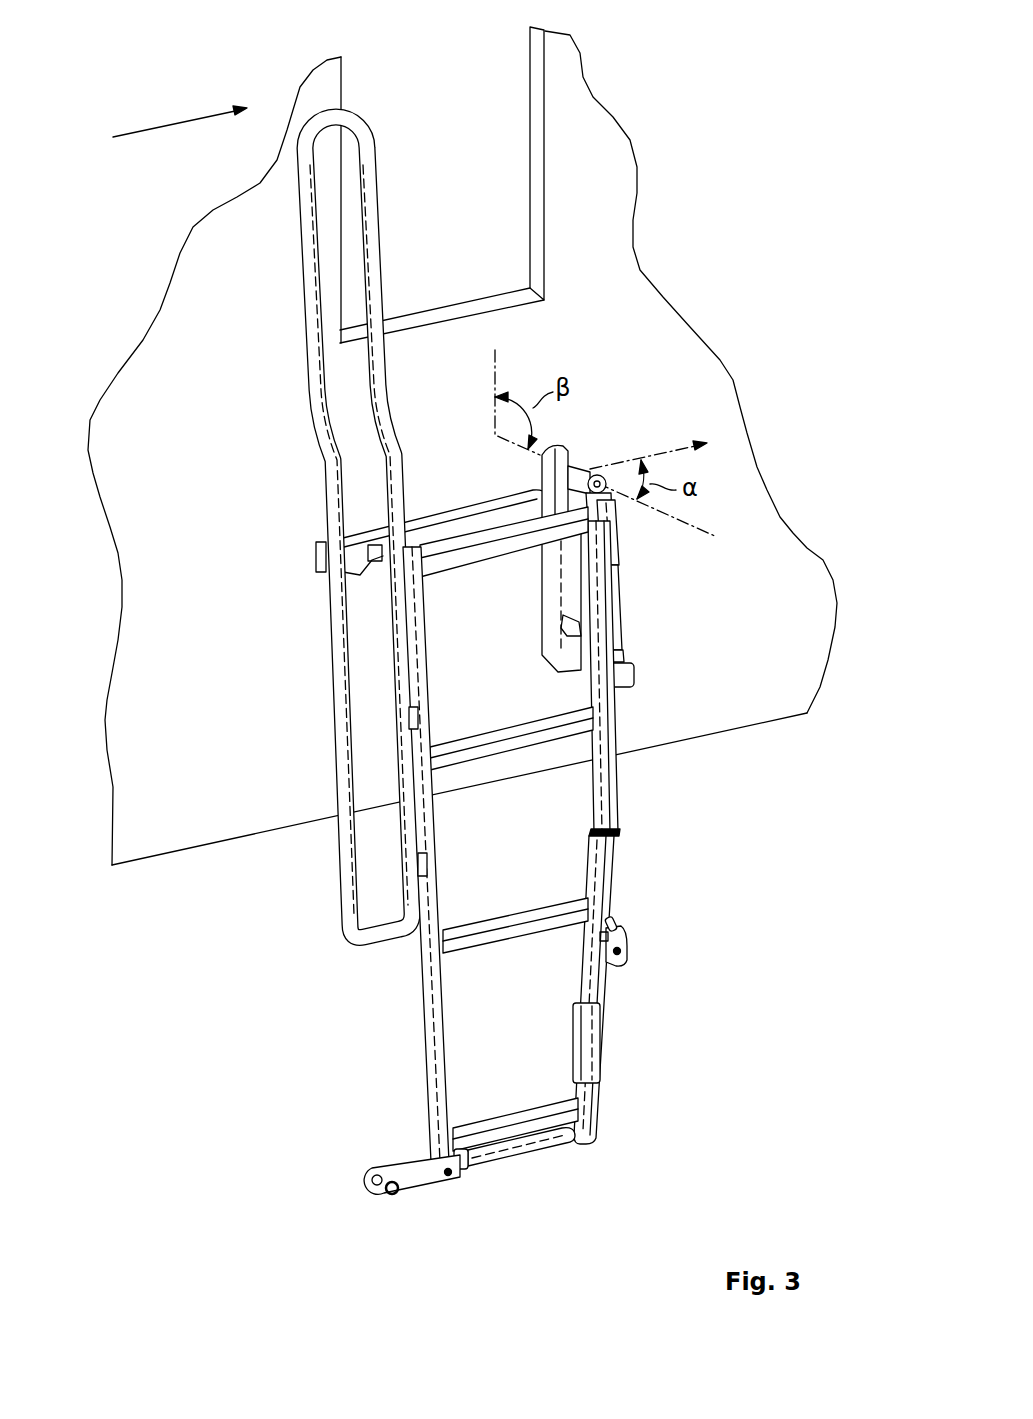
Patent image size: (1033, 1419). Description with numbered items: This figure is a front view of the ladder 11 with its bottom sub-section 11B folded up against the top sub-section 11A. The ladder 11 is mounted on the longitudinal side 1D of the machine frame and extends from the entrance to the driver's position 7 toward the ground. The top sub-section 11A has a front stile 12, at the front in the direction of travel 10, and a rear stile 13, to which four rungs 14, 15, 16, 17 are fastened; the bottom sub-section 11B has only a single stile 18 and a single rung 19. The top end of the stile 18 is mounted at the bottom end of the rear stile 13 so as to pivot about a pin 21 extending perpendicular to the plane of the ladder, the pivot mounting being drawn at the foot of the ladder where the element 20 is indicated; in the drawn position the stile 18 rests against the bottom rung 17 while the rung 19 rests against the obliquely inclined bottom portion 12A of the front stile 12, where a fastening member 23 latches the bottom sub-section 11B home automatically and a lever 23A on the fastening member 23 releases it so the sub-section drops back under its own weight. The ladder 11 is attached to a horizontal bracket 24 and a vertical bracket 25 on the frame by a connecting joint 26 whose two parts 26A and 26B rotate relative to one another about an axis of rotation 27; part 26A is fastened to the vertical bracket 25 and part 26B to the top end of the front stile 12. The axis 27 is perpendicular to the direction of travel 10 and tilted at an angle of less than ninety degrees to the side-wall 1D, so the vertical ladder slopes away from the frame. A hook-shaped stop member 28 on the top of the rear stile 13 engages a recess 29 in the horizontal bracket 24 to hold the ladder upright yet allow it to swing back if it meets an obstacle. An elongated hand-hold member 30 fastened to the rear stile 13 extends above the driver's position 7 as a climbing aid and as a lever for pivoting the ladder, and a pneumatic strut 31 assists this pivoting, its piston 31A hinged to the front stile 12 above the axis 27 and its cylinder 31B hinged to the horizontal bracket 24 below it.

The longitudinal side 1D is at (607, 212).
The driver's position 7 is at (450, 112).
The direction of travel 10 is at (160, 128).
The ladder 11 is at (462, 705).
The top sub-section 11A is at (578, 589).
The bottom sub-section 11B is at (478, 1065).
The front stile 12 is at (612, 800).
The bottom portion of front stile 12A is at (615, 902).
The rear stile 13 is at (432, 830).
The rung 14 is at (440, 572).
The rung 15 is at (480, 747).
The rung 16 is at (488, 937).
The bottom rung 17 is at (493, 1128).
The stile 18 is at (537, 1141).
The rung 19 is at (598, 1043).
The foot link 20 is at (412, 1224).
The pin 21 is at (447, 1177).
The fastening member 23 is at (660, 956).
The lever 23A is at (621, 933).
The horizontal bracket 24 is at (434, 539).
The vertical bracket 25 is at (548, 613).
The connecting joint 26 is at (604, 452).
The joint part 26A is at (611, 508).
The joint part 26B is at (588, 462).
The axis of rotation 27 is at (718, 540).
The stop member 28 is at (383, 565).
The recess 29 is at (380, 563).
The hand-hold member 30 is at (347, 880).
The pneumatic strut 31 is at (598, 593).
The piston 31A is at (567, 550).
The cylinder 31B is at (617, 625).